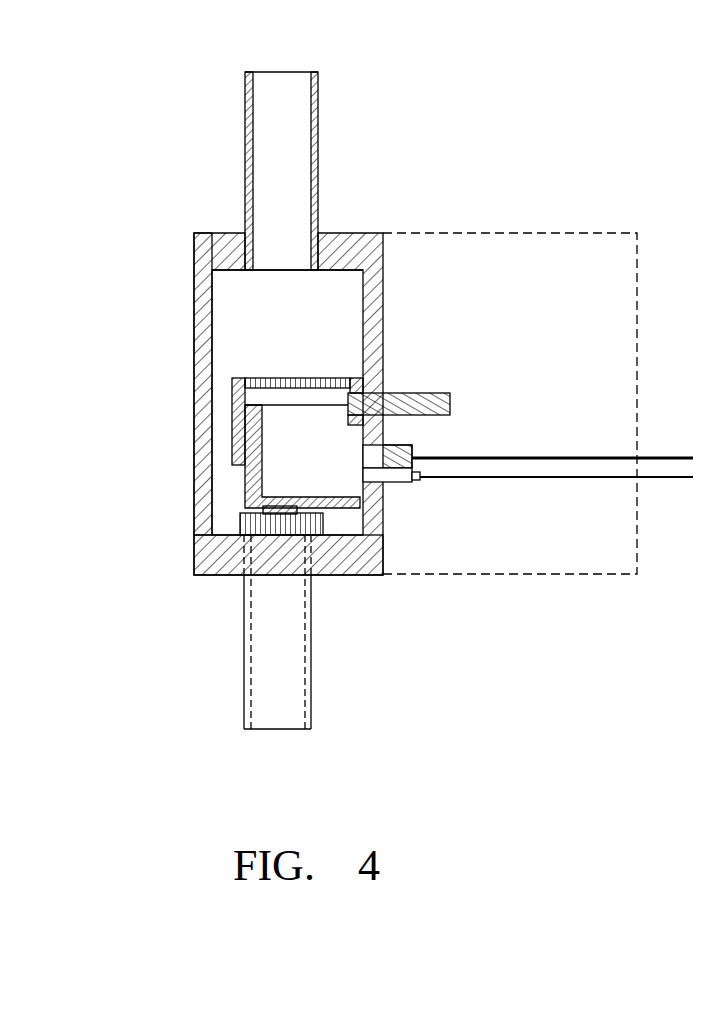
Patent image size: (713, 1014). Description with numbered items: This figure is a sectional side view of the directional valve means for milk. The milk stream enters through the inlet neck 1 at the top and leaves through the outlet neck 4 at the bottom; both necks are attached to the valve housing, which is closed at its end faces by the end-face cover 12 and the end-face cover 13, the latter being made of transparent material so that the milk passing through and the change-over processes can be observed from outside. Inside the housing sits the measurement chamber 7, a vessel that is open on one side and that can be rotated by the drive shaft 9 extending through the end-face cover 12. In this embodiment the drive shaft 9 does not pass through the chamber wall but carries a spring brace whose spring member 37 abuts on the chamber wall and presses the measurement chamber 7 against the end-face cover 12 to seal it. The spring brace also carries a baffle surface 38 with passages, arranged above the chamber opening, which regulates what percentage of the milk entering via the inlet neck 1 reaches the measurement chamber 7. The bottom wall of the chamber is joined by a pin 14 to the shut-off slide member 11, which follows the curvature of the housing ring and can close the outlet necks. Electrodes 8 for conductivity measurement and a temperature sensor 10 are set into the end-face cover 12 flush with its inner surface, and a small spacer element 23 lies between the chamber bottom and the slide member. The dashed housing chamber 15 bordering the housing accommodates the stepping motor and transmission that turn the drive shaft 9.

The inlet neck 1 is at (303, 100).
The outlet neck 4 is at (280, 717).
The measurement chamber 7 is at (250, 470).
The electrodes 8 is at (402, 475).
The drive shaft 9 is at (425, 395).
The temperature sensor 10 is at (412, 447).
The shut-off slide member 11 is at (317, 520).
The end-face cover 12 is at (381, 240).
The end-face cover 13 is at (193, 290).
The pin 14 is at (237, 537).
The housing chamber 15 is at (497, 233).
The spacer 23 is at (340, 503).
The spring member 37 is at (237, 396).
The baffle surface 38 is at (322, 378).